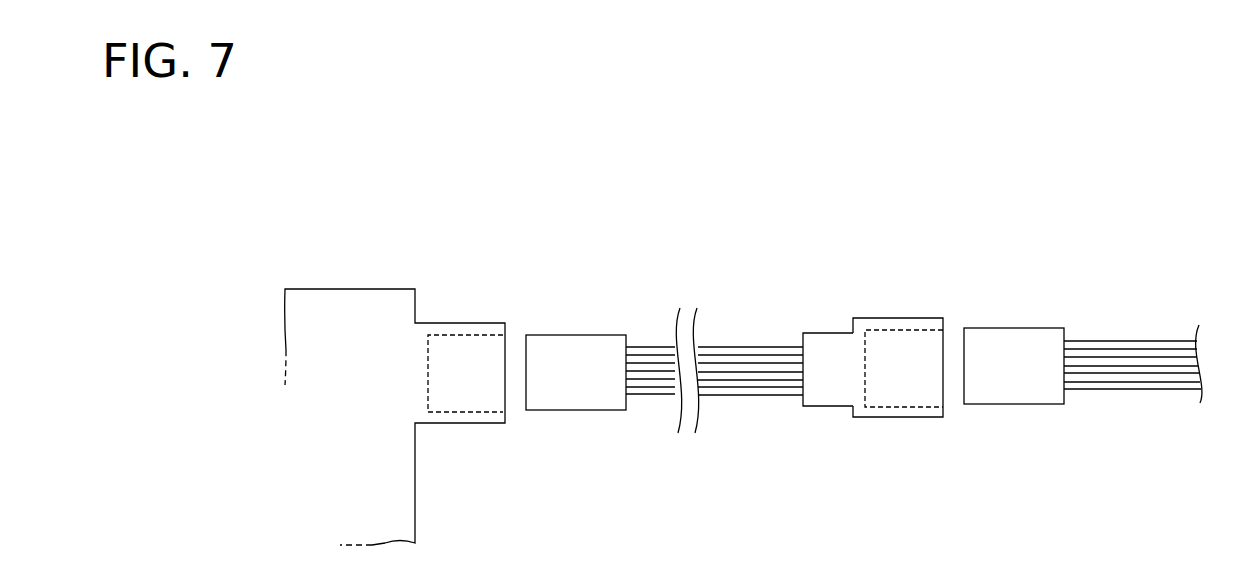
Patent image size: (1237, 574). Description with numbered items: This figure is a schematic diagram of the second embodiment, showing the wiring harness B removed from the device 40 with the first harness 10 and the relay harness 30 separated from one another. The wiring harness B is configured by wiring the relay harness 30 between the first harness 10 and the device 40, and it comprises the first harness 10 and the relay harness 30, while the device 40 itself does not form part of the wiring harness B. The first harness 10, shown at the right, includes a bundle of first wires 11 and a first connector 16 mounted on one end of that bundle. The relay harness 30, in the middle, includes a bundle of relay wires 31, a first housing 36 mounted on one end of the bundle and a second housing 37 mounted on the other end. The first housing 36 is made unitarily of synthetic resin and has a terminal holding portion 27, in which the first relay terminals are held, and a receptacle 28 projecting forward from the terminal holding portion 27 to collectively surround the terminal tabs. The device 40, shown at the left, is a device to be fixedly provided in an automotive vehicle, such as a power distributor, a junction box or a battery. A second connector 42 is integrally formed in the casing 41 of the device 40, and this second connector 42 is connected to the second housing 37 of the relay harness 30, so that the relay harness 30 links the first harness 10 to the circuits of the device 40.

The first harness 10 is at (1110, 250).
The first wires 11 is at (1143, 368).
The first connector 16 is at (1015, 395).
The terminal holding portion 27 is at (837, 397).
The receptacle 28 is at (912, 410).
The relay harness 30 is at (792, 260).
The relay wires 31 is at (750, 370).
The first housing 36 is at (925, 485).
The second housing 37 is at (588, 395).
The device 40 is at (402, 255).
The casing 41 is at (310, 300).
The second connector 42 is at (468, 328).
The wiring harness B is at (1175, 195).